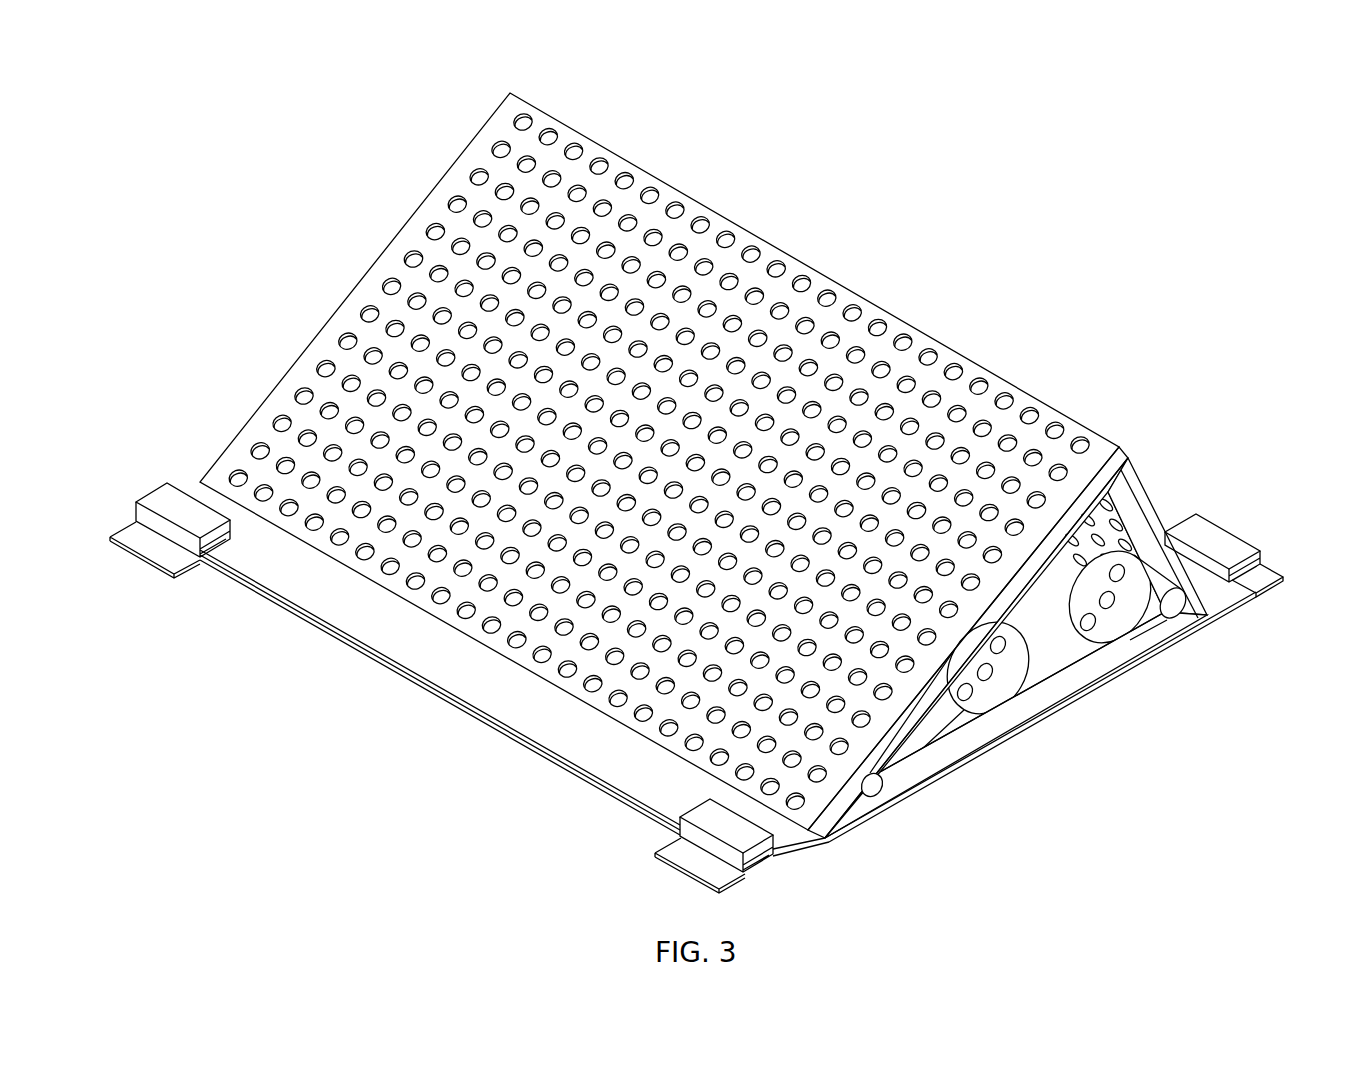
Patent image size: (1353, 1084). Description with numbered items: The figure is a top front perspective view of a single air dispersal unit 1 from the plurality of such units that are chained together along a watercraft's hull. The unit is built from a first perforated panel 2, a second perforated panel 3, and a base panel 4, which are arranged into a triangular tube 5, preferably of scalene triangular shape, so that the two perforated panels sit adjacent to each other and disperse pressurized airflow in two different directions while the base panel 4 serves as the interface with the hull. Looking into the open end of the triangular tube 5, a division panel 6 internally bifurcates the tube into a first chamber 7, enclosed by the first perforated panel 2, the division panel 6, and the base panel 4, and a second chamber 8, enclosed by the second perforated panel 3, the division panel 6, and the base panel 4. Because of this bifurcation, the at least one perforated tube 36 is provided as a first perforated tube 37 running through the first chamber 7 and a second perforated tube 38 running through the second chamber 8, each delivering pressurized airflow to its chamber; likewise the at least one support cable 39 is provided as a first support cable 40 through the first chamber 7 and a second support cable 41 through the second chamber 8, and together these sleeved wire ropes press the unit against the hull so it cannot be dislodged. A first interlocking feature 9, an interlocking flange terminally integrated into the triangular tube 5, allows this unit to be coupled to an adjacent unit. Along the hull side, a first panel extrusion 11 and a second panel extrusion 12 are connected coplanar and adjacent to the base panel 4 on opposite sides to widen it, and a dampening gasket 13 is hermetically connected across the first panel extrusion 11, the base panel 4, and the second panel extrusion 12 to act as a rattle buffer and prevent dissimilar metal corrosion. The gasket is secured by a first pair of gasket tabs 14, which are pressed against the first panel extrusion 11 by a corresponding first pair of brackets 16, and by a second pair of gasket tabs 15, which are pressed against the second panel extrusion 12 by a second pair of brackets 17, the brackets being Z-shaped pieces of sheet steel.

The air dispersal unit 1 is at (1017, 75).
The first perforated panel 2 is at (310, 346).
The second perforated panel 3 is at (1122, 448).
The base panel 4 is at (932, 735).
The triangular tube 5 is at (324, 184).
The division panel 6 is at (1070, 688).
The first chamber 7 is at (1020, 788).
The second chamber 8 is at (1180, 716).
The first interlocking feature 9 is at (1142, 494).
The first panel extrusion 11 is at (350, 633).
The second panel extrusion 12 is at (1218, 595).
The dampening gasket 13 is at (408, 702).
The first pair of gasket tabs 14 is at (160, 490).
The second pair of gasket tabs 15 is at (1205, 520).
The first pair of brackets 16 is at (158, 556).
The second pair of brackets 17 is at (1250, 545).
The perforated tube 36 is at (1044, 705).
The first perforated tube 37 is at (1000, 712).
The second perforated tube 38 is at (1106, 632).
The support cable 39 is at (1065, 701).
The first support cable 40 is at (876, 795).
The second support cable 41 is at (1177, 610).